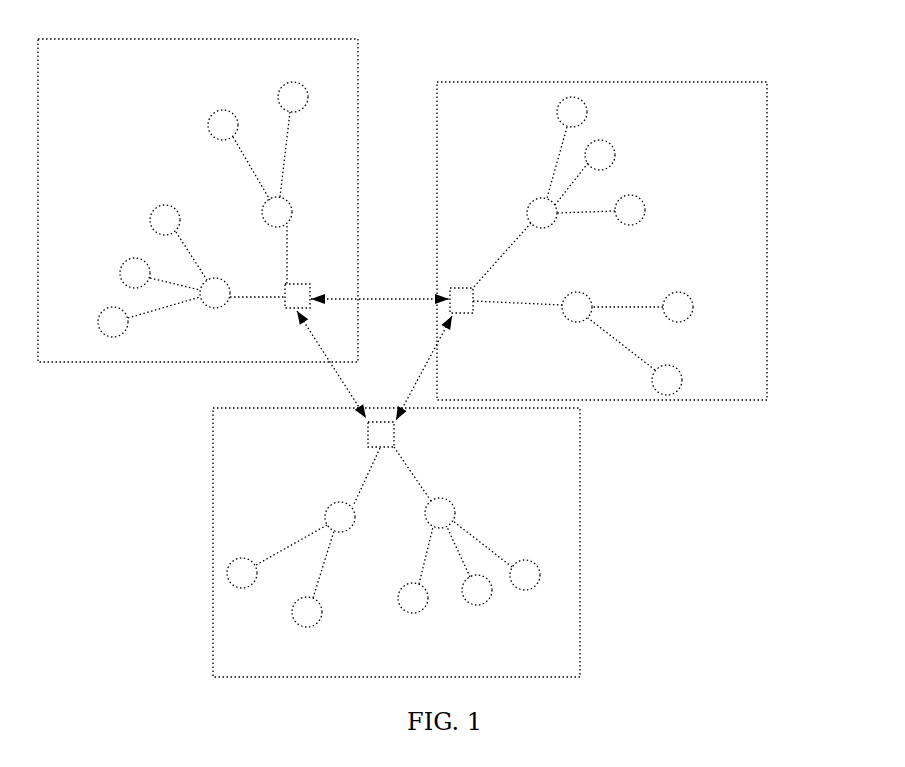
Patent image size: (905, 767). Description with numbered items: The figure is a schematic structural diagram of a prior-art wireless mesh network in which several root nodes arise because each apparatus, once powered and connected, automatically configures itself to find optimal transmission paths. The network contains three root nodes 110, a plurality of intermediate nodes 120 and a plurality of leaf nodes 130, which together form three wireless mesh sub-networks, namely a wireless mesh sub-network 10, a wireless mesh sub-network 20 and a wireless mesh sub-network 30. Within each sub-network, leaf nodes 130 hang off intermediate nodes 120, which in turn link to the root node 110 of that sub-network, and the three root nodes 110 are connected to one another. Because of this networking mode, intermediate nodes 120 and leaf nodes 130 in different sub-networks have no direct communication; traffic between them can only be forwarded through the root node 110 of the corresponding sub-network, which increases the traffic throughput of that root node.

The wireless mesh sub-network 10 is at (767, 148).
The wireless mesh sub-network 20 is at (175, 38).
The wireless mesh sub-network 30 is at (579, 510).
The root node 110 is at (300, 284).
The intermediate node 120 is at (300, 200).
The leaf node 130 is at (223, 110).